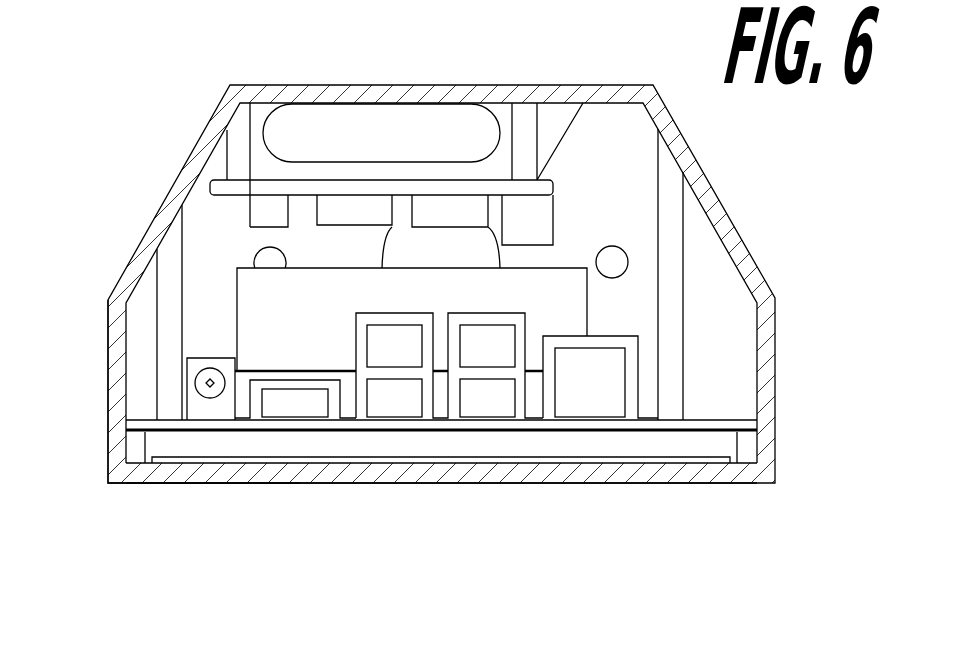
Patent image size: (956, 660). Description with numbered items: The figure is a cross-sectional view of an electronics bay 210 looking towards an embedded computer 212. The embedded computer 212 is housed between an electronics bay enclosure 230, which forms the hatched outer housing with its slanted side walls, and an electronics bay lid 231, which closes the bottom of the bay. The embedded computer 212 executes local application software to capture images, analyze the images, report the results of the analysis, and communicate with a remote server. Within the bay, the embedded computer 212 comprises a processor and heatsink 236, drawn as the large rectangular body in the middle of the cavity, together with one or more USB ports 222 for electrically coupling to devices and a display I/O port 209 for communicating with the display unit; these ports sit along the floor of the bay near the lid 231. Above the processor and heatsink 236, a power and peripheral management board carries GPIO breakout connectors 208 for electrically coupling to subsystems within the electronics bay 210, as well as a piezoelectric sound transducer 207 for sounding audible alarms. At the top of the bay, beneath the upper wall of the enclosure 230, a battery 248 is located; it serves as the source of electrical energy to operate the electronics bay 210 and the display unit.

The electronics bay 210 is at (180, 157).
The electronics bay enclosure 230 is at (105, 392).
The electronics bay lid 231 is at (697, 487).
The battery 248 is at (268, 110).
The GPIO breakout connectors 208 is at (565, 180).
The piezoelectric sound transducer 207 is at (565, 216).
The processor and heatsink 236 is at (235, 299).
The display I/O port 209 is at (293, 410).
The USB ports 222 is at (477, 415).
The embedded computer 212 is at (702, 417).